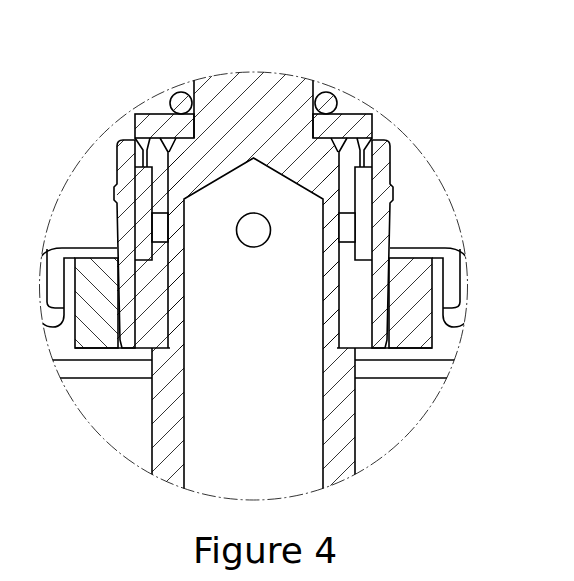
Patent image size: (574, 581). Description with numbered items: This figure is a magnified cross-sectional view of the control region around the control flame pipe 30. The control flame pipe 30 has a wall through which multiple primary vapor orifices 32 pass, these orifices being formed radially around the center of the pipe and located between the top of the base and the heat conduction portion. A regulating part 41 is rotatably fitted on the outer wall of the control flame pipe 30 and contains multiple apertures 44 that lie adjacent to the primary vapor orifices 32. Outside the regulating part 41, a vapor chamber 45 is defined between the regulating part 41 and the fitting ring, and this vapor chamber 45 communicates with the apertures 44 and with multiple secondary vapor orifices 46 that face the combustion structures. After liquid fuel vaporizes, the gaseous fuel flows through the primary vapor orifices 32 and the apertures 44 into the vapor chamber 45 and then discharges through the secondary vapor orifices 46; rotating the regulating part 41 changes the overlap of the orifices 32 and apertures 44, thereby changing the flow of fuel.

The control flame pipe 30 is at (294, 103).
The primary vapor orifices 32 is at (253, 213).
The regulating part 41 is at (146, 150).
The apertures 44 is at (348, 232).
The vapor chamber 45 is at (363, 168).
The secondary vapor orifices 46 is at (384, 188).